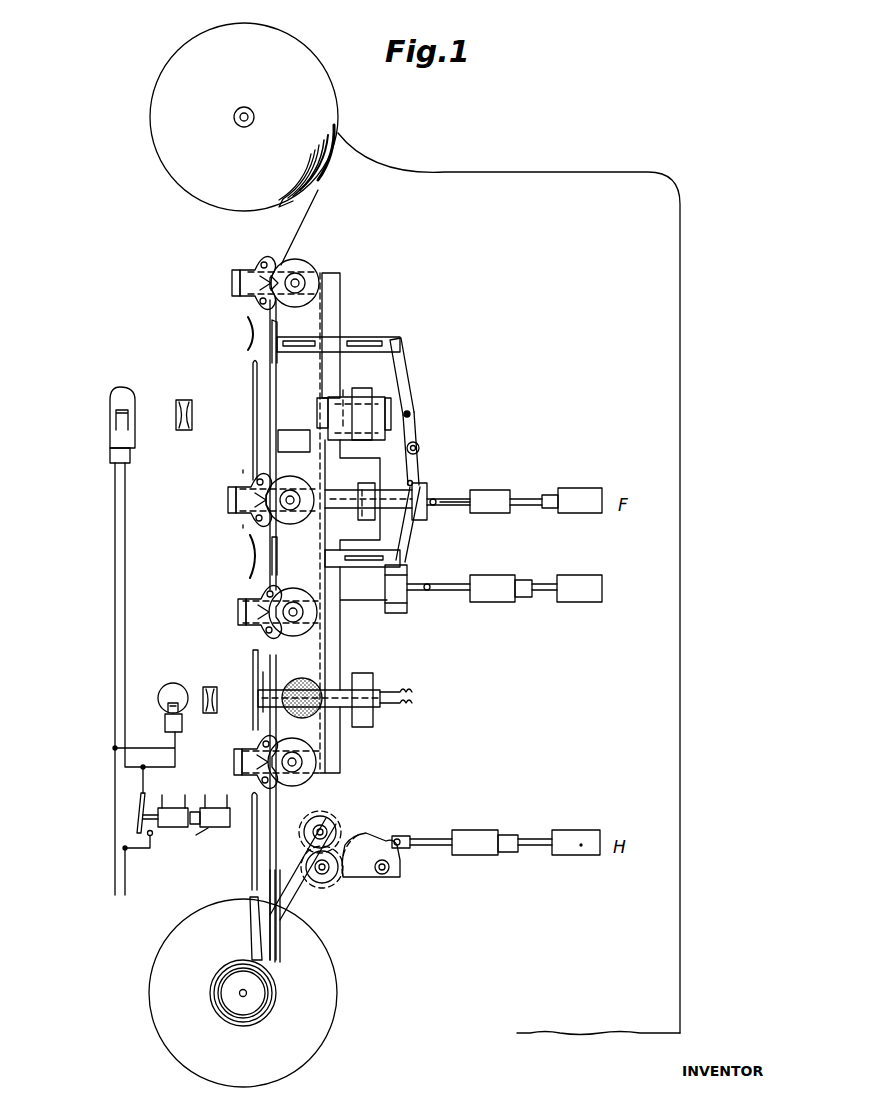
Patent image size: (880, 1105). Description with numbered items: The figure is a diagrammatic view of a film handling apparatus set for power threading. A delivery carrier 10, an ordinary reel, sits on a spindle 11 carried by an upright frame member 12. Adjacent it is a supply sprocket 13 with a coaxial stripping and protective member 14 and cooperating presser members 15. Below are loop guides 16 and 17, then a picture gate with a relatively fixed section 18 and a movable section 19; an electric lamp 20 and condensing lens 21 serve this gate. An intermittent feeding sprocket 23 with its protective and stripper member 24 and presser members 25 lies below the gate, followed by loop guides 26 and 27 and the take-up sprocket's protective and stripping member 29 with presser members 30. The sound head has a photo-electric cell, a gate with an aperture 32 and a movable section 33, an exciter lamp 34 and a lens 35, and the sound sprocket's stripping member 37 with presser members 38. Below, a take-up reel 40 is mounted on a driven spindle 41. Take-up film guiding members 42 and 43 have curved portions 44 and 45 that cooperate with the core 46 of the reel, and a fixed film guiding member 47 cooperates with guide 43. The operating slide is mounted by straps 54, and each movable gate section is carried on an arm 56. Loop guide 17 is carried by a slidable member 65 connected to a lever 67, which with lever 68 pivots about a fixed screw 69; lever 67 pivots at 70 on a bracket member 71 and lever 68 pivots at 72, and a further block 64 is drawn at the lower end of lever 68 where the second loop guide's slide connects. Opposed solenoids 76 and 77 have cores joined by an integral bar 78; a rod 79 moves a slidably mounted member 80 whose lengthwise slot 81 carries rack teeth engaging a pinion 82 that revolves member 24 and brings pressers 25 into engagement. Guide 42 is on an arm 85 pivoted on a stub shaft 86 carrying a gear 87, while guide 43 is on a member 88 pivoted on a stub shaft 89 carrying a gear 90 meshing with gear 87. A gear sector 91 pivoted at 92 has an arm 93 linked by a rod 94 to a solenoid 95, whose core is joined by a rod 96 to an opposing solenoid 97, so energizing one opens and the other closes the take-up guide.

The delivery carrier 10 is at (320, 104).
The spindle 11 is at (243, 118).
The upright frame member 12 is at (655, 257).
The supply sprocket 13 is at (280, 267).
The stripping and protective member 14 is at (318, 273).
The presser members 15 is at (255, 258).
The film guiding member (loop guide) 16 is at (247, 328).
The film guiding member (loop guide) 17 is at (279, 328).
The relatively fixed gate section 18 is at (268, 443).
The relatively movable gate section 19 is at (252, 373).
The electric lamp 20 is at (108, 455).
The condensing lens 21 is at (176, 410).
The intermittent feeding sprocket 23 is at (294, 443).
The protective and stripper member 24 is at (267, 495).
The presser members 25 is at (243, 474).
The loop guide 26 is at (250, 557).
The loop guide 27 is at (276, 538).
The protective and stripping member 29 is at (297, 635).
The presser members 30 is at (243, 632).
The aperture 32 is at (267, 700).
The relatively movable gate section 33 is at (256, 652).
The exciter lamp 34 is at (166, 722).
The lens 35 is at (203, 692).
The stripping and protecting member 37 is at (297, 787).
The presser members 38 is at (247, 740).
The take-up reel 40 is at (287, 1068).
The driven spindle 41 is at (240, 994).
The take-up film guiding member 42 is at (278, 952).
The take-up film guiding member 43 is at (222, 960).
The curved portion 44 is at (260, 1025).
The curved portion 45 is at (216, 978).
The core 46 is at (223, 1020).
The fixed film guiding member 47 is at (253, 857).
The straps 54 is at (278, 263).
The arm 56 is at (263, 678).
The slide block 64 is at (448, 594).
The slidable member 65 is at (362, 338).
The lever 67 is at (405, 363).
The lever 68 is at (407, 533).
The fixed screw 69 is at (420, 449).
The pivot 70 is at (414, 412).
The bracket member 71 is at (403, 405).
The pivot 72 is at (420, 481).
The solenoid 76 is at (573, 488).
The solenoid 77 is at (492, 490).
The integral bar 78 is at (528, 494).
The rod 79 is at (460, 506).
The slidably mounted member 80 is at (380, 507).
The lengthwise slot 81 is at (325, 485).
The pinion 82 is at (285, 487).
The arm 85 is at (293, 912).
The stub shaft 86 is at (328, 830).
The gear 87 is at (330, 822).
The member 88 is at (262, 893).
The stub shaft 89 is at (319, 881).
The gear 90 is at (323, 878).
The gear sector 91 is at (366, 877).
The pivot 92 is at (388, 870).
The arm 93 is at (400, 855).
The rod 94 is at (433, 840).
The solenoid 95 is at (467, 830).
The rod 96 is at (527, 840).
The solenoid 97 is at (573, 830).